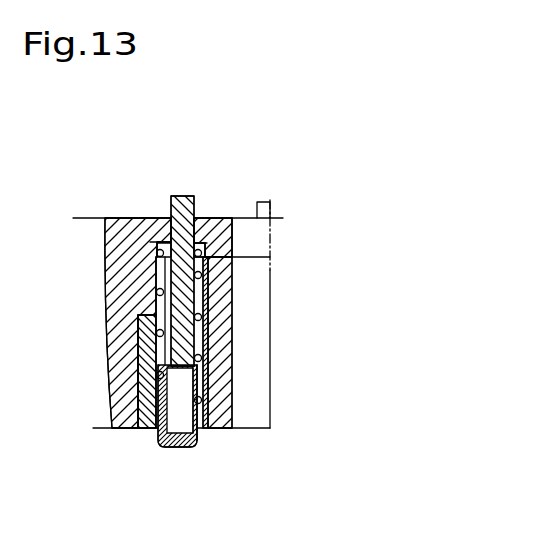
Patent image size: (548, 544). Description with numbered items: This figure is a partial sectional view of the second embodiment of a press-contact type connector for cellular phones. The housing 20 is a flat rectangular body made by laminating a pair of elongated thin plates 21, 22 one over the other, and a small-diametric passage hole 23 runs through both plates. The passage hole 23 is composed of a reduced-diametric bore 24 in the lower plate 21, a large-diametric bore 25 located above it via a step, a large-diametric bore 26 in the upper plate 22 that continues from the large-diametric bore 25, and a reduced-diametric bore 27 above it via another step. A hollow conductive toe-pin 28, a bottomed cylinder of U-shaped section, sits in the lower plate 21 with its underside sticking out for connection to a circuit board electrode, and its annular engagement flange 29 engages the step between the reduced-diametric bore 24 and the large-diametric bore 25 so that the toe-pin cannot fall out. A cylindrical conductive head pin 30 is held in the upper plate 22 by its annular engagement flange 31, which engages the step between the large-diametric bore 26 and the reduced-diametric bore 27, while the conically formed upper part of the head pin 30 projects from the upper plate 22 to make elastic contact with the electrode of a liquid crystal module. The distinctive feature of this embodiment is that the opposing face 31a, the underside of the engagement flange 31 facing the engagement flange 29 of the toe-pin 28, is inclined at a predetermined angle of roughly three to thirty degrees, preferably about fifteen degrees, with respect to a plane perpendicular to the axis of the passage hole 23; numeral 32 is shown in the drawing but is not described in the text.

The housing 20 is at (138, 348).
The lower plate 21 is at (223, 427).
The upper plate 22 is at (217, 216).
The passage hole 23 is at (233, 361).
The reduced-diametric bore 24 is at (152, 428).
The large-diametric bore 25 is at (138, 396).
The large-diametric bore 26 is at (200, 316).
The reduced-diametric bore 27 is at (163, 241).
The conductive toe-pin 28 is at (161, 447).
The engagement flange 29 is at (203, 432).
The conductive head pin 30 is at (186, 196).
The engagement flange 31 is at (162, 250).
The opposing face 31a is at (232, 257).
The guide sleeve 32 is at (156, 278).